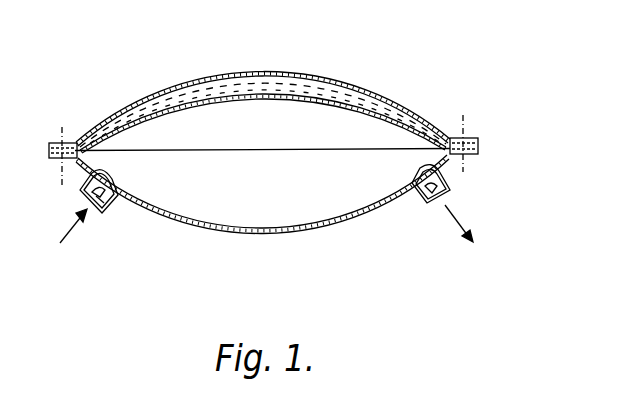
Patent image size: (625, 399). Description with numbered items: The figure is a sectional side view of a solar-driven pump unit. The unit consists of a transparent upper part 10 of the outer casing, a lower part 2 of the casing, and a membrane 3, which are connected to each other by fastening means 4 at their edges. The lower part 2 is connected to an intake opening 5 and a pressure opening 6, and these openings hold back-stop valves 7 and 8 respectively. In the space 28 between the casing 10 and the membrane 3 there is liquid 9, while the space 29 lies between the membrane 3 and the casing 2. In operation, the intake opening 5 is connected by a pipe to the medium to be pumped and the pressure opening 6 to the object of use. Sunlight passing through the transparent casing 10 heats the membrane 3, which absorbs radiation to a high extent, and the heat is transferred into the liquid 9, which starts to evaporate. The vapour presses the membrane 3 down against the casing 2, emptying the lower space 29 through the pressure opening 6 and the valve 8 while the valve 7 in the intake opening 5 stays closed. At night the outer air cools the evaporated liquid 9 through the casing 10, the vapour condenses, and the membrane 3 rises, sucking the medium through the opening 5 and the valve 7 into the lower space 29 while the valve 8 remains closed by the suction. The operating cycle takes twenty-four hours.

The lower part of the casing 2 is at (362, 210).
The membrane 3 is at (291, 95).
The fastening means 4 is at (466, 131).
The intake opening 5 is at (109, 198).
The pressure opening 6 is at (412, 185).
The valve 7 is at (110, 202).
The valve 8 is at (450, 188).
The liquid 9 is at (218, 88).
The transparent upper part of the outer casing 10 is at (387, 100).
The space 28 is at (143, 110).
The lower space 29 is at (265, 198).